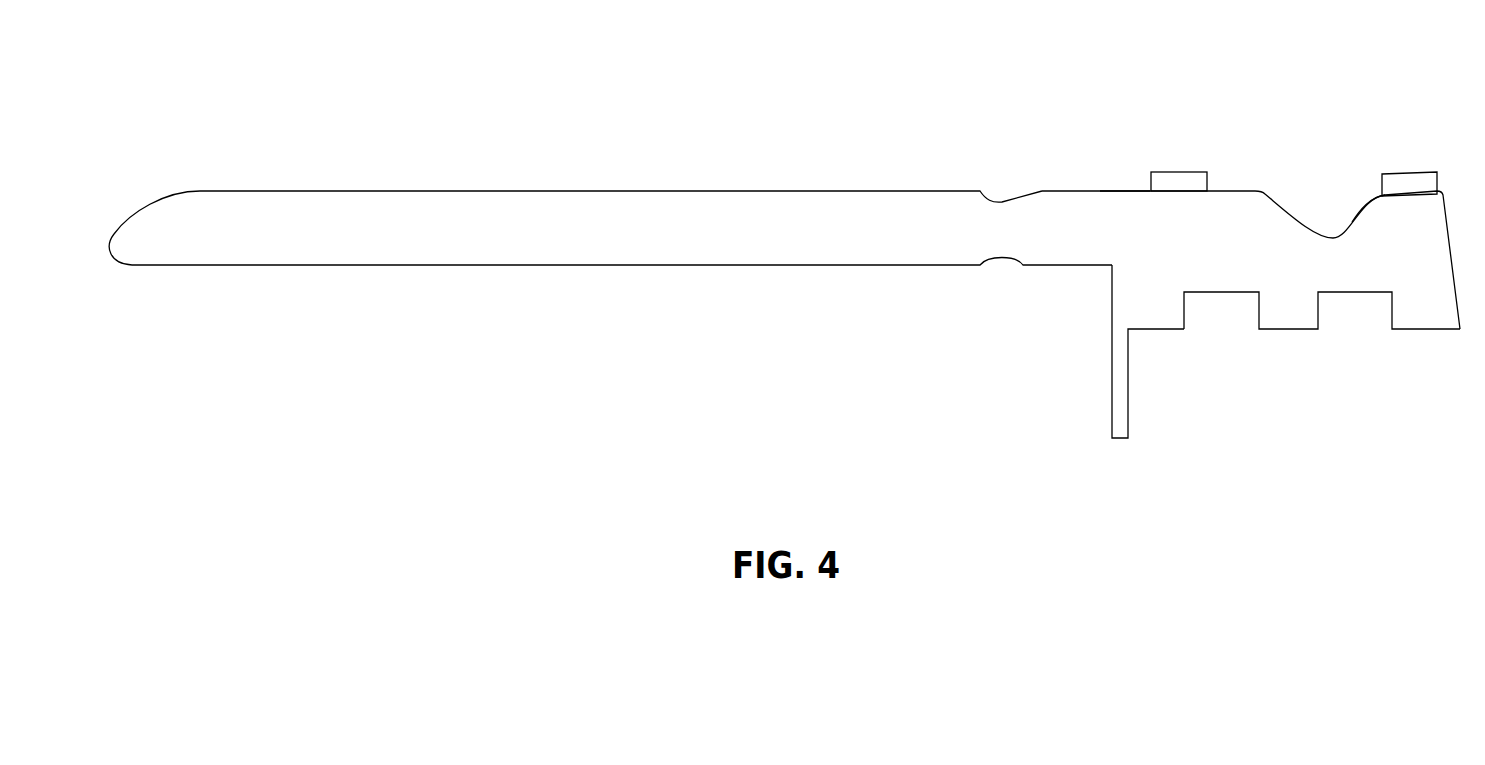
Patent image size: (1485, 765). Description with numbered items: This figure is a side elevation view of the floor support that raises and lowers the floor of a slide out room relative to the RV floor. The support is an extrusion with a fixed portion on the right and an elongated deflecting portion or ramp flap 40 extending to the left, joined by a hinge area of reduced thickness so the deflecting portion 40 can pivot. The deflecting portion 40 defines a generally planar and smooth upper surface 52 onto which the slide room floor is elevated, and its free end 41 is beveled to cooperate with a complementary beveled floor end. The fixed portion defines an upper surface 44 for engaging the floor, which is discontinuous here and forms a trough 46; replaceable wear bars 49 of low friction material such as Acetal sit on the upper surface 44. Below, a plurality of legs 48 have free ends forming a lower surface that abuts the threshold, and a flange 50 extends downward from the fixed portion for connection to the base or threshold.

The deflecting portion 40 is at (417, 240).
The free end 41 is at (146, 210).
The upper surface 44 is at (1121, 180).
The trough 46 is at (1331, 170).
The legs 48 is at (1418, 313).
The wear bar 49 is at (1177, 185).
The flange 50 is at (1115, 430).
The upper surface 52 is at (582, 182).